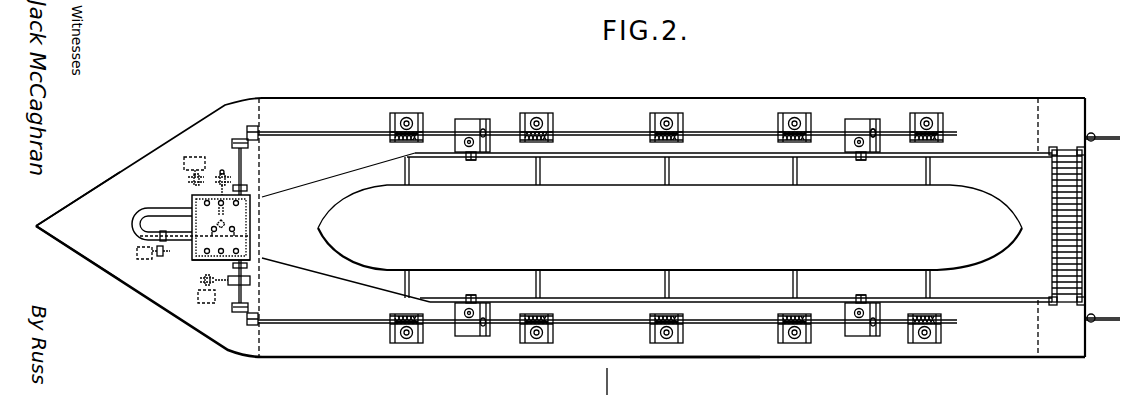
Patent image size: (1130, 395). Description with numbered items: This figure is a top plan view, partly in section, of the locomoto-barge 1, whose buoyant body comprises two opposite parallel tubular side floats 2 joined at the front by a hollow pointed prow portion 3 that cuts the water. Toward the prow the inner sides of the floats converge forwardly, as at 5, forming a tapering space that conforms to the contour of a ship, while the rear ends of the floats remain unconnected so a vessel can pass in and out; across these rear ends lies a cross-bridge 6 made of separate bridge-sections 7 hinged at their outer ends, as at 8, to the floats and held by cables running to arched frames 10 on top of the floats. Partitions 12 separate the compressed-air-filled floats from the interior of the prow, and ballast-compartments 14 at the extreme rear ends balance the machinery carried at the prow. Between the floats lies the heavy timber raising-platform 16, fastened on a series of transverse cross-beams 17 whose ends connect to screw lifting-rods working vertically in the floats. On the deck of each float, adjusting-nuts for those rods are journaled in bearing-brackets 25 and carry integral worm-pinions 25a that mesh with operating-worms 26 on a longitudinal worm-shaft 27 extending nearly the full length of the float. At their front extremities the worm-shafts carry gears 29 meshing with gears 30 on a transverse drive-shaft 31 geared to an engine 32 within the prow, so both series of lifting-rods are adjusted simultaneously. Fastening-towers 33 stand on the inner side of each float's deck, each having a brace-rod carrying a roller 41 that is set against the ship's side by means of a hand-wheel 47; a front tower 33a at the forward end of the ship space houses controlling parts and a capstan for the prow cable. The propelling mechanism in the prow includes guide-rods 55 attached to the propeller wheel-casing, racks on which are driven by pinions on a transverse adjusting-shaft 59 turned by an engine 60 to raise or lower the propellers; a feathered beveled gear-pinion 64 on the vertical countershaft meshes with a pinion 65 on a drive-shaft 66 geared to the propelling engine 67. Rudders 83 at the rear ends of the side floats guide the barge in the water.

The barge 1 is at (560, 230).
The tubular side floats 2 is at (764, 110).
The hollow pointed prow portion 3 is at (78, 226).
The forwardly-convergent inner sides 5 is at (328, 181).
The cross-bridge 6 is at (1082, 184).
The bridge-sections 7 is at (535, 394).
The hinges 8 is at (470, 394).
The arched frames 10 is at (1066, 315).
The partitions 12 is at (262, 112).
The ballast-compartments 14 is at (1040, 108).
The raising-platform 16 is at (670, 227).
The transverse cross-beams 17 is at (541, 176).
The bearing-brackets 25 is at (392, 118).
The worm-pinions 25a is at (403, 117).
The operating-worms 26 is at (407, 140).
The longitudinal worm-shafts 27 is at (343, 130).
The gears 29 is at (247, 130).
The gears 30 is at (232, 141).
The drive-shaft 31 is at (266, 291).
The engine 32 is at (198, 295).
The fastening-towers 33 is at (490, 120).
The front tower 33a is at (192, 205).
The roller 41 is at (470, 162).
The hand-wheel 47 is at (854, 153).
The guide-rods 55 is at (205, 256).
The transverse adjusting-shaft 59 is at (176, 232).
The engine 60 is at (137, 254).
The beveled gear-pinion 64 is at (222, 237).
The beveled gear-pinion 65 is at (219, 211).
The drive-shaft 66 is at (209, 182).
The engine 67 is at (183, 163).
The rudders 83 is at (1105, 137).